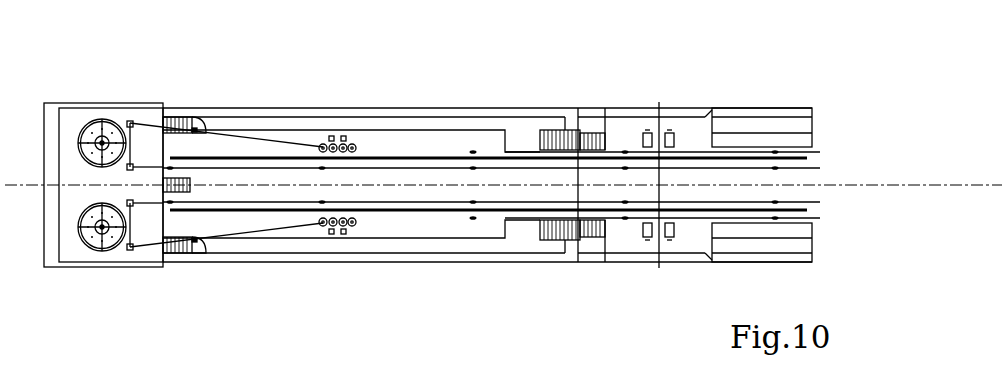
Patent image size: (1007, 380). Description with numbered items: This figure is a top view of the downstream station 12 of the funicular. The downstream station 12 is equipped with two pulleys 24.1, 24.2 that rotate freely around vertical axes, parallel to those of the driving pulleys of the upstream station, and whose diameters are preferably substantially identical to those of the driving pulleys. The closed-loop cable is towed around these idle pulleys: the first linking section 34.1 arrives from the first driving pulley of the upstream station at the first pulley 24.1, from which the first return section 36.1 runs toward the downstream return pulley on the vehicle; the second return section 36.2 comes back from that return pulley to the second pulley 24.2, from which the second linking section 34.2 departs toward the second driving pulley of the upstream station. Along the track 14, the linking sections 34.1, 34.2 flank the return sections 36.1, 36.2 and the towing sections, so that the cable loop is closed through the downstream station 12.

The downstream station 12 is at (552, 95).
The track 14 is at (690, 158).
The first pulley of the downstream station 24.1 is at (112, 241).
The second pulley of the downstream station 24.2 is at (93, 130).
The first linking section 34.1 is at (282, 227).
The second linking section 34.2 is at (223, 137).
The first return section 36.1 is at (233, 210).
The second return section 36.2 is at (258, 158).